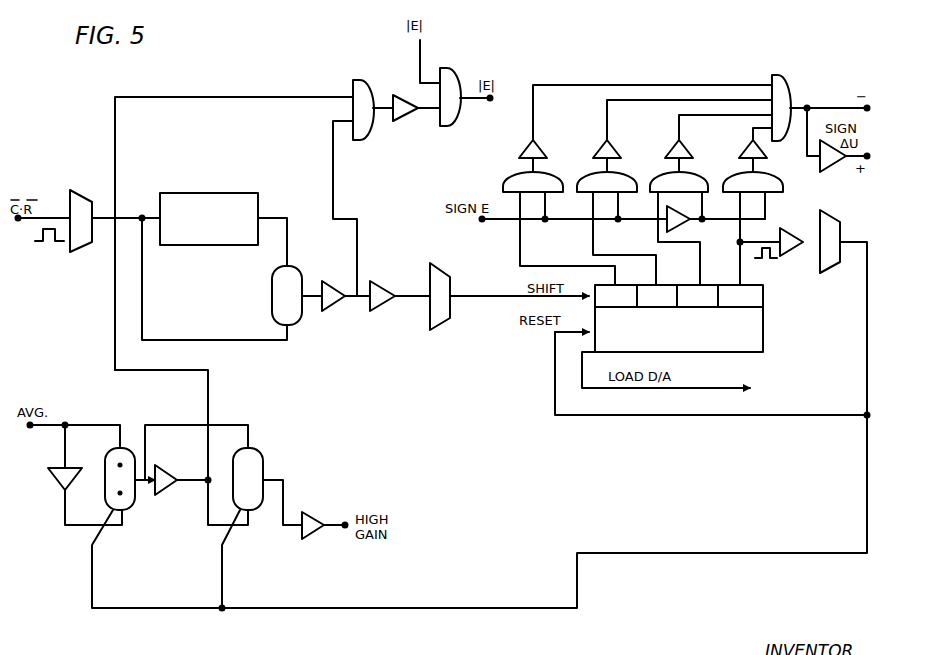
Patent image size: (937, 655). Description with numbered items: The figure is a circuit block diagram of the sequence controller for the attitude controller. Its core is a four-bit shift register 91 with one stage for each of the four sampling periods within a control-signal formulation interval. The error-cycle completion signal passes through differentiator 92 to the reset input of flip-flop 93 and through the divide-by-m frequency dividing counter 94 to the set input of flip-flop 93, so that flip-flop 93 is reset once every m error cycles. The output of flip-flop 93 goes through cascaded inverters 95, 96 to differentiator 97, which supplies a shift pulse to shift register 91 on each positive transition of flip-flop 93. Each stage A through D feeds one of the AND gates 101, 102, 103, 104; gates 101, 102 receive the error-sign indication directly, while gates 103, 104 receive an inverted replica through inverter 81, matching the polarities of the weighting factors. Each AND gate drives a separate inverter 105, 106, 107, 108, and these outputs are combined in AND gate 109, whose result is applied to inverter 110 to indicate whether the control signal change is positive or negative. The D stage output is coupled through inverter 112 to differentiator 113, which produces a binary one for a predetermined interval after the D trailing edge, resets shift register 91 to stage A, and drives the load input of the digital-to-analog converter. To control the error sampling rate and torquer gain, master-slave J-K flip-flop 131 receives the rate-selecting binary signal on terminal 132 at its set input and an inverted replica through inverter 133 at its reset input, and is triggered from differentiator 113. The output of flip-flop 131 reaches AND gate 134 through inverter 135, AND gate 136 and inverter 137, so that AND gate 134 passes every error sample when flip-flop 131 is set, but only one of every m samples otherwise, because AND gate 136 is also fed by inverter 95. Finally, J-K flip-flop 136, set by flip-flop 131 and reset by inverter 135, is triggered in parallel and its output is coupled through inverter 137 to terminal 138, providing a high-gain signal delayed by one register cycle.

The inverter 81 is at (688, 226).
The 4-bit shift register 91 is at (735, 352).
The differentiator 92 is at (77, 191).
The flip-flop 93 is at (272, 296).
The divide by m frequency dividing counter 94 is at (258, 201).
The inverter 95 is at (333, 312).
The inverter 96 is at (381, 288).
The differentiator 97 is at (445, 270).
The AND gate 101 is at (508, 175).
The AND gate 102 is at (585, 166).
The AND gate 103 is at (656, 164).
The AND gate 104 is at (730, 164).
The inverter 105 is at (521, 149).
The inverter 106 is at (596, 146).
The inverter 107 is at (667, 148).
The inverter 108 is at (740, 148).
The AND gate 109 is at (781, 77).
The inverter 110 is at (830, 168).
The inverter 112 is at (791, 256).
The differentiator 113 is at (833, 273).
The flip-flop 131 is at (128, 510).
The terminal 132 is at (30, 429).
The inverter 133 is at (56, 483).
The AND gate 134 is at (456, 118).
The inverter 135 is at (167, 492).
The AND gate / J-K flip-flop 136 is at (362, 80).
The inverter 137 is at (405, 121).
The terminal 138 is at (345, 522).